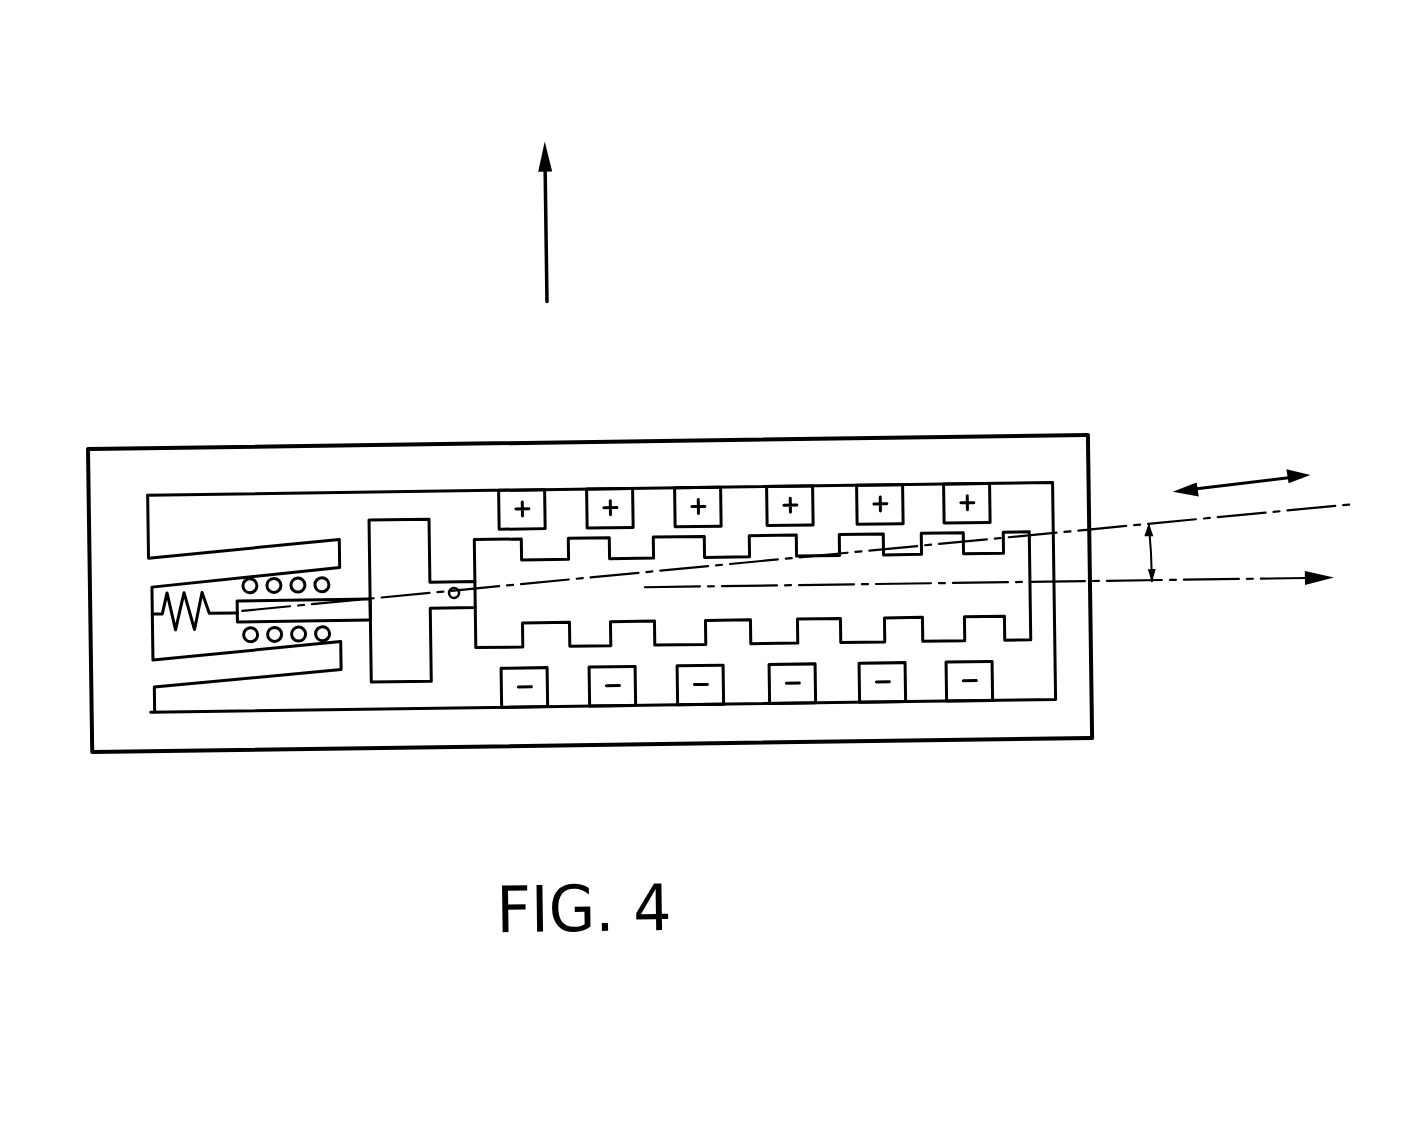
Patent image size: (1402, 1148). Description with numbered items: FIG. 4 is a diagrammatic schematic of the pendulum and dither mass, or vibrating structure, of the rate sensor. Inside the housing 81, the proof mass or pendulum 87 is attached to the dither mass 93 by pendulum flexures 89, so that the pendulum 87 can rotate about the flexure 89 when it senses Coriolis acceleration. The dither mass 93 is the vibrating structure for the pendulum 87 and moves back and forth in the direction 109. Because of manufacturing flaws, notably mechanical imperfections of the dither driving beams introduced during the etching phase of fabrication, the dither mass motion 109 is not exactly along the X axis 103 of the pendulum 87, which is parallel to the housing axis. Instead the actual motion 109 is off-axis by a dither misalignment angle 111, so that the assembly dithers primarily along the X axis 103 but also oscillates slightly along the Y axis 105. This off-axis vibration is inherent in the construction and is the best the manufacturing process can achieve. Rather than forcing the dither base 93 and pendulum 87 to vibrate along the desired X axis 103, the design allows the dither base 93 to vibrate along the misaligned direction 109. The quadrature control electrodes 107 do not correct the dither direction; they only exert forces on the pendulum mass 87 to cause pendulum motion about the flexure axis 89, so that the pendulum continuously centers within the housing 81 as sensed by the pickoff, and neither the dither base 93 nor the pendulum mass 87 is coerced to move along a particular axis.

The housing 81 is at (972, 735).
The proof mass 87 is at (818, 629).
The pendulum flexures 89 is at (448, 572).
The dither mass 93 is at (400, 689).
The X axis 103 is at (1262, 596).
The Y axis 105 is at (549, 214).
The quadrature control electrodes 107 is at (822, 546).
The dither mass motion direction 109 is at (1242, 499).
The dither misalignment angle 111 is at (1152, 563).